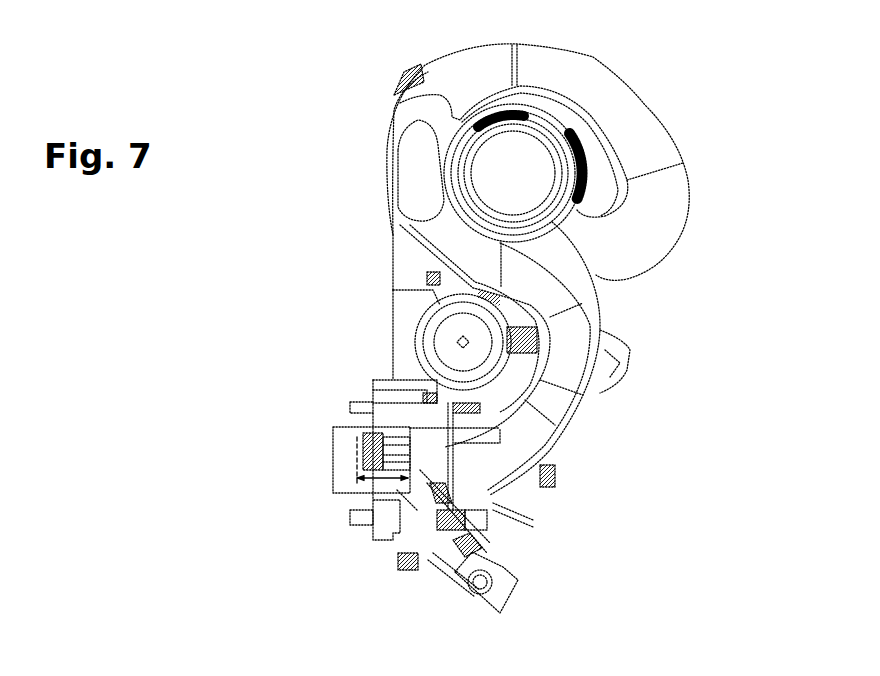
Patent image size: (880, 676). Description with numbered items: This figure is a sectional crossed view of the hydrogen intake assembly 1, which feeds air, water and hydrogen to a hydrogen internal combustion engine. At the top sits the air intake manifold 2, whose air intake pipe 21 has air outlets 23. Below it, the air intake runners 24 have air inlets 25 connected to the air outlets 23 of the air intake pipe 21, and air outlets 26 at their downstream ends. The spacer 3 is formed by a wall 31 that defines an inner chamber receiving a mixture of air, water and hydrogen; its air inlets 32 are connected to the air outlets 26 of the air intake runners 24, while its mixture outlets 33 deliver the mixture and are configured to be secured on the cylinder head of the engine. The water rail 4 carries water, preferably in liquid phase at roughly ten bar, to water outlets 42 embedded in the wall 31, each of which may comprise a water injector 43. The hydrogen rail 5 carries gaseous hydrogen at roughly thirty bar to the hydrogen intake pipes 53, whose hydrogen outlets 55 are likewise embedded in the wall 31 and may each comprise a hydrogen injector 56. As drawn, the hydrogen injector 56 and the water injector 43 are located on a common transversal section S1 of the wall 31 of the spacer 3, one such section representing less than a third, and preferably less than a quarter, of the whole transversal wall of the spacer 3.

The hydrogen intake assembly 1 is at (290, 362).
The air intake manifold 2 is at (640, 313).
The spacer 3 is at (362, 352).
The water rail 4 is at (457, 614).
The hydrogen rail 5 is at (374, 294).
The air intake pipe 21 is at (520, 157).
The air outlets 23 is at (560, 211).
The air intake runners 24 is at (688, 195).
The air inlets 25 is at (555, 222).
The air outlets 26 is at (410, 437).
The wall 31 is at (350, 467).
The air inlets 32 is at (497, 487).
The mixture outlets 33 is at (333, 450).
The water outlets 42 is at (483, 567).
The water injector 43 is at (422, 523).
The hydrogen intake pipes 53 is at (633, 363).
The hydrogen outlets 55 is at (393, 455).
The hydrogen injector 56 is at (405, 470).
The common transversal section S1 is at (395, 488).